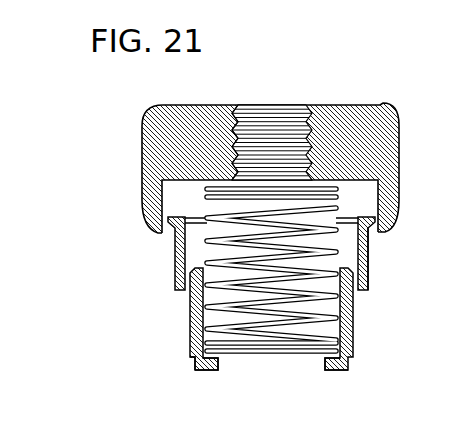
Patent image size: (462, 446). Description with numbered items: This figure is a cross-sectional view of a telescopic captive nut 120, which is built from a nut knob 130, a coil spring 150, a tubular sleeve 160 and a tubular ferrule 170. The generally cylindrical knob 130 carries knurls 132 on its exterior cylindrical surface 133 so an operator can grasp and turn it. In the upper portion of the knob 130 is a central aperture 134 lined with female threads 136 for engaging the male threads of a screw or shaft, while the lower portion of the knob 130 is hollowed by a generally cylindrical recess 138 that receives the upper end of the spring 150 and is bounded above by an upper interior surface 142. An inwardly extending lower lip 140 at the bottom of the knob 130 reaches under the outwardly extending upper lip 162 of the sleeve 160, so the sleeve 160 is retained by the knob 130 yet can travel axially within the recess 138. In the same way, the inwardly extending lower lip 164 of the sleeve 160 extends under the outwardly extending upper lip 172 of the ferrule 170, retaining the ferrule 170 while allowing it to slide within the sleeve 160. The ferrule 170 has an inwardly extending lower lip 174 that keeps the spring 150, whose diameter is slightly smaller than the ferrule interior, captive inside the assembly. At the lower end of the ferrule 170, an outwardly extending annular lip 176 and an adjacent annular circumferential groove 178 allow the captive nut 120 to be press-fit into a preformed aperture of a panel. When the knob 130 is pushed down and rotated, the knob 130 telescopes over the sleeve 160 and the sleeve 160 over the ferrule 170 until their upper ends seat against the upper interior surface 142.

The telescopic captive nut 120 is at (124, 171).
The nut knob 130 is at (160, 152).
The knurls 132 is at (141, 133).
The exterior cylindrical surface 133 is at (398, 125).
The central aperture 134 is at (272, 110).
The female threads 136 is at (241, 118).
The recess 138 is at (165, 228).
The upper interior surface 142 is at (381, 192).
The lower lip 140 is at (382, 238).
The upper lip 162 is at (175, 242).
The lower lip 164 is at (358, 289).
The sleeve 160 is at (368, 274).
The spring 150 is at (193, 315).
The ferrule 170 is at (192, 335).
The annular circumferential groove 178 is at (190, 361).
The annular lip 176 is at (203, 367).
The lower lip 174 is at (334, 371).
The upper lip 172 is at (357, 260).